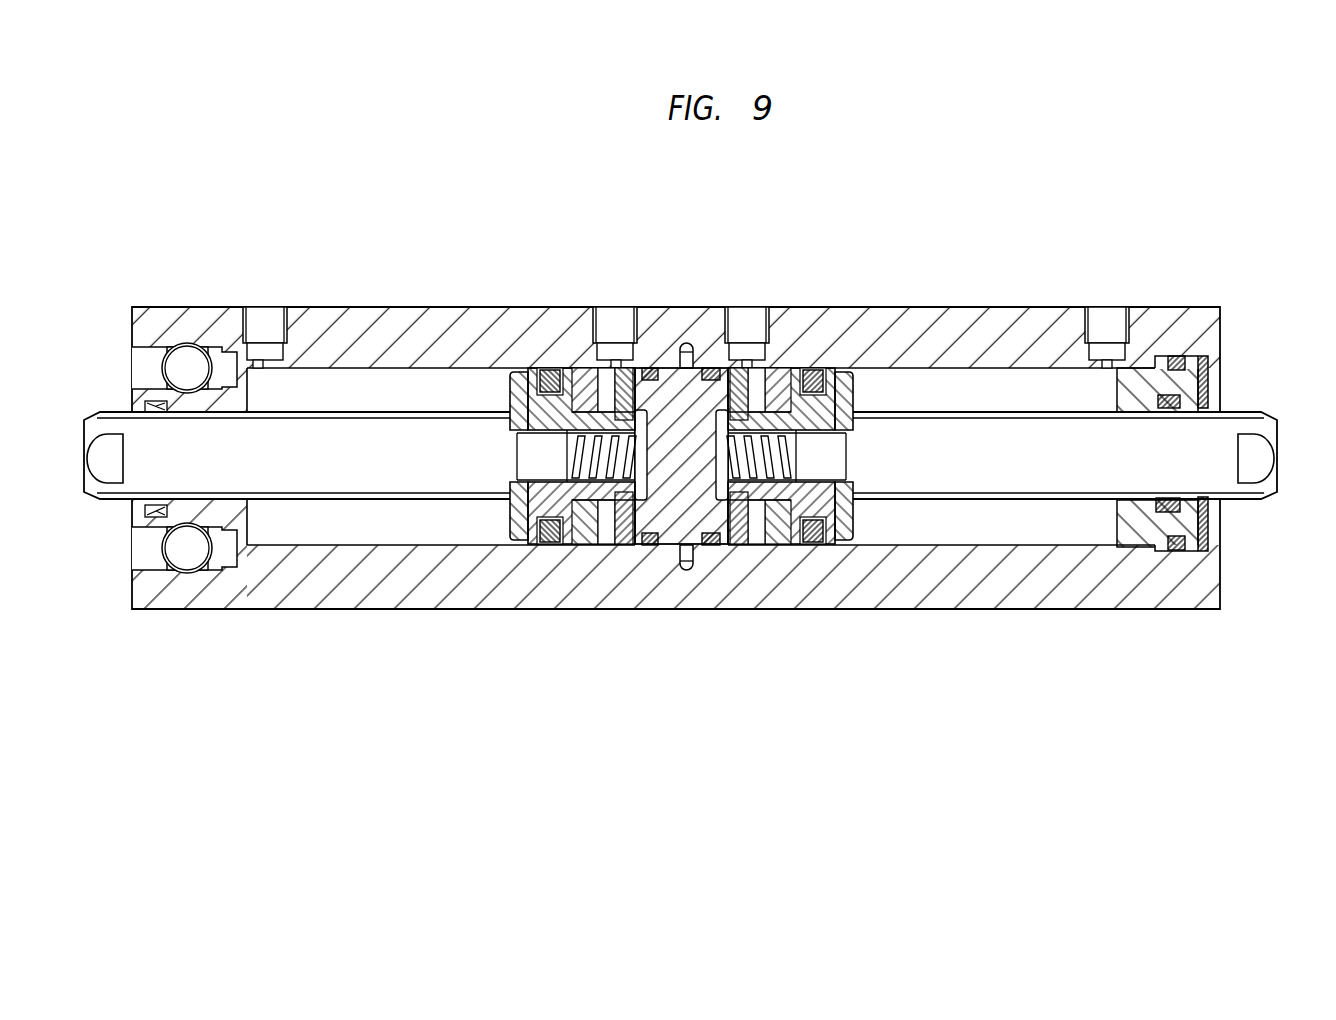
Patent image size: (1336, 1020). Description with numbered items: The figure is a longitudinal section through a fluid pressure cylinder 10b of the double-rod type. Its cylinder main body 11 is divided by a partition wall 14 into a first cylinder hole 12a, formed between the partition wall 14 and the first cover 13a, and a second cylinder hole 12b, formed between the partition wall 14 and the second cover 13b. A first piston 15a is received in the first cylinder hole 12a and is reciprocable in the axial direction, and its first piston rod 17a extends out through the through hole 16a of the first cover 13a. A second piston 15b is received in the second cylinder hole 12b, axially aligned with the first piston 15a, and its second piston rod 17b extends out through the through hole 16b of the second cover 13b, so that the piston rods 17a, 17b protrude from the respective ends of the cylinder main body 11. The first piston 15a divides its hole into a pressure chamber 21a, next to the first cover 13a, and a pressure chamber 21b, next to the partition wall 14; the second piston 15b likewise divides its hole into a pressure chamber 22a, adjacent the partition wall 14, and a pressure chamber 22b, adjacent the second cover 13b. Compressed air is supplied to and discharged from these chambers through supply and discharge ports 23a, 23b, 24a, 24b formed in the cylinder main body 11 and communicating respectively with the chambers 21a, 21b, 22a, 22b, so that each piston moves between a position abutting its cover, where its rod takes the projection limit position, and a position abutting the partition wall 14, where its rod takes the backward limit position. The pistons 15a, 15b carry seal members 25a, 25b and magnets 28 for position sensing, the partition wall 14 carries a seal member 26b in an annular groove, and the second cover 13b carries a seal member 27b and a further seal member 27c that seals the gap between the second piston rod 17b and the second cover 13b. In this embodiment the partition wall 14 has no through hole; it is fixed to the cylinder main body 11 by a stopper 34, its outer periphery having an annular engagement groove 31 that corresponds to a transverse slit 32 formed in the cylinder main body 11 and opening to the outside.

The fluid pressure cylinder 10b is at (1221, 265).
The cylinder main body 11 is at (1193, 333).
The first cylinder hole 12a is at (431, 369).
The second cylinder hole 12b is at (925, 369).
The first cover 13a is at (220, 513).
The second cover 13b is at (1137, 527).
The partition wall 14 is at (634, 590).
The first piston 15a is at (546, 528).
The second piston 15b is at (849, 520).
The through hole 16a is at (187, 492).
The through hole 16b is at (1197, 485).
The first piston rod 17a is at (370, 438).
The second piston rod 17b is at (995, 438).
The pressure chamber 21a is at (372, 527).
The pressure chamber 21b is at (598, 545).
The pressure chamber 22a is at (740, 545).
The pressure chamber 22b is at (990, 527).
The supply and discharge port 23a is at (258, 308).
The supply and discharge port 23b is at (606, 308).
The supply and discharge port 24a is at (750, 308).
The supply and discharge port 24b is at (1105, 308).
The seal member 25a is at (542, 373).
The seal member 25b is at (810, 373).
The seal member 26b is at (687, 345).
The seal member 27b is at (1173, 552).
The seal member 27c is at (1183, 402).
The magnet 28 is at (587, 522).
The engagement groove 31 is at (692, 566).
The slit 32 is at (687, 487).
The stopper 34 is at (648, 369).